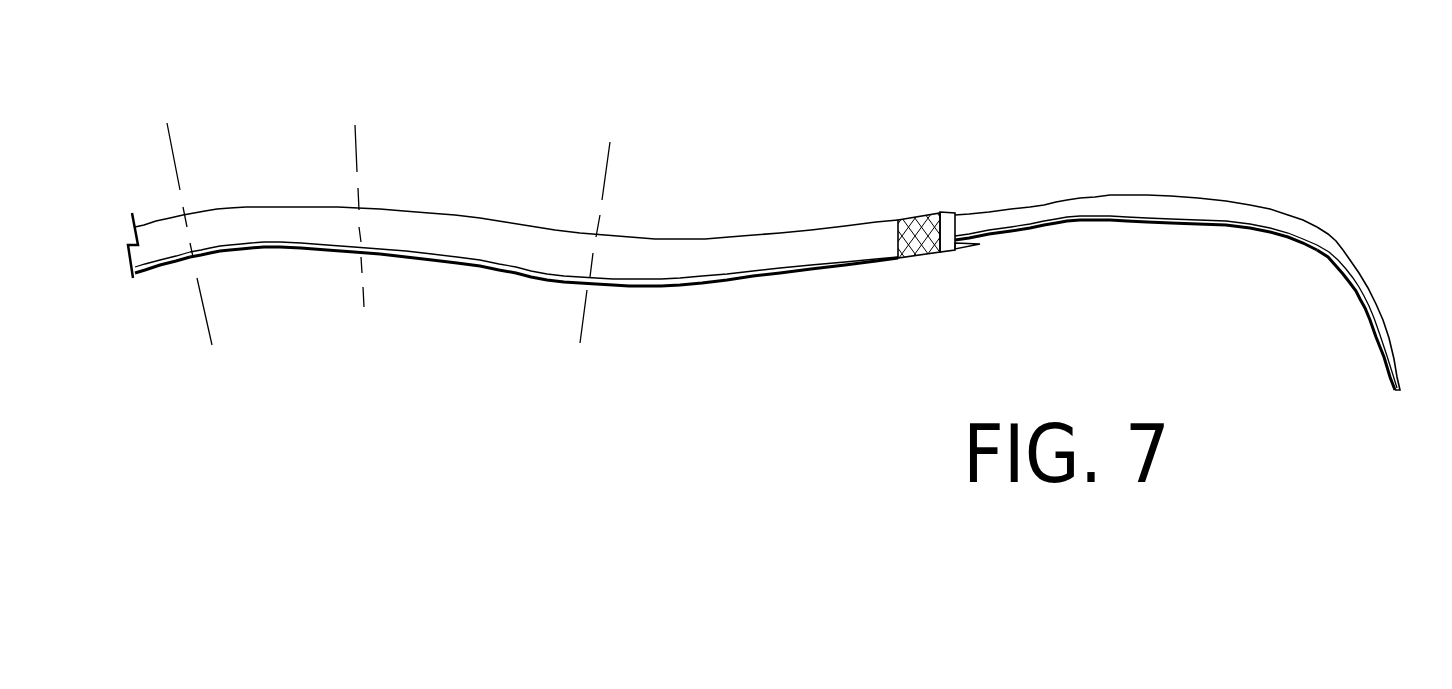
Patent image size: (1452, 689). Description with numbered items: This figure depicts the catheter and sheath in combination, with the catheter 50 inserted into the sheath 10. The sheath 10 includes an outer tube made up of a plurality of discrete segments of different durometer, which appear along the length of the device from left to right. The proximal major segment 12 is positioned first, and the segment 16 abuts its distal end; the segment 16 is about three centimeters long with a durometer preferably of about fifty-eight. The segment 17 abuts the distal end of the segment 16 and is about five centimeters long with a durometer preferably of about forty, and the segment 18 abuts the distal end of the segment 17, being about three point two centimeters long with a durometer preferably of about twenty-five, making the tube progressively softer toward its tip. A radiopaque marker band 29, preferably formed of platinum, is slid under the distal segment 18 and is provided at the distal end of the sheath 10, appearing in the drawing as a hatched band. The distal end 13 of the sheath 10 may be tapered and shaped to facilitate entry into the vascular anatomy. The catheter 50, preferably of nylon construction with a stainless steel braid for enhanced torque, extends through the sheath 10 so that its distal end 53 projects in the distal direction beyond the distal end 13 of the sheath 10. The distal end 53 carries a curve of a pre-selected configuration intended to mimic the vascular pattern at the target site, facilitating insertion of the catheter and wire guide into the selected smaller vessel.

The sheath 10 is at (585, 100).
The major segment 12 is at (160, 228).
The distal end 13 is at (973, 245).
The segment 16 is at (238, 225).
The segment 17 is at (463, 225).
The segment 18 is at (712, 252).
The radiopaque marker band 29 is at (917, 213).
The catheter 50 is at (1095, 178).
The distal end 53 is at (1337, 243).